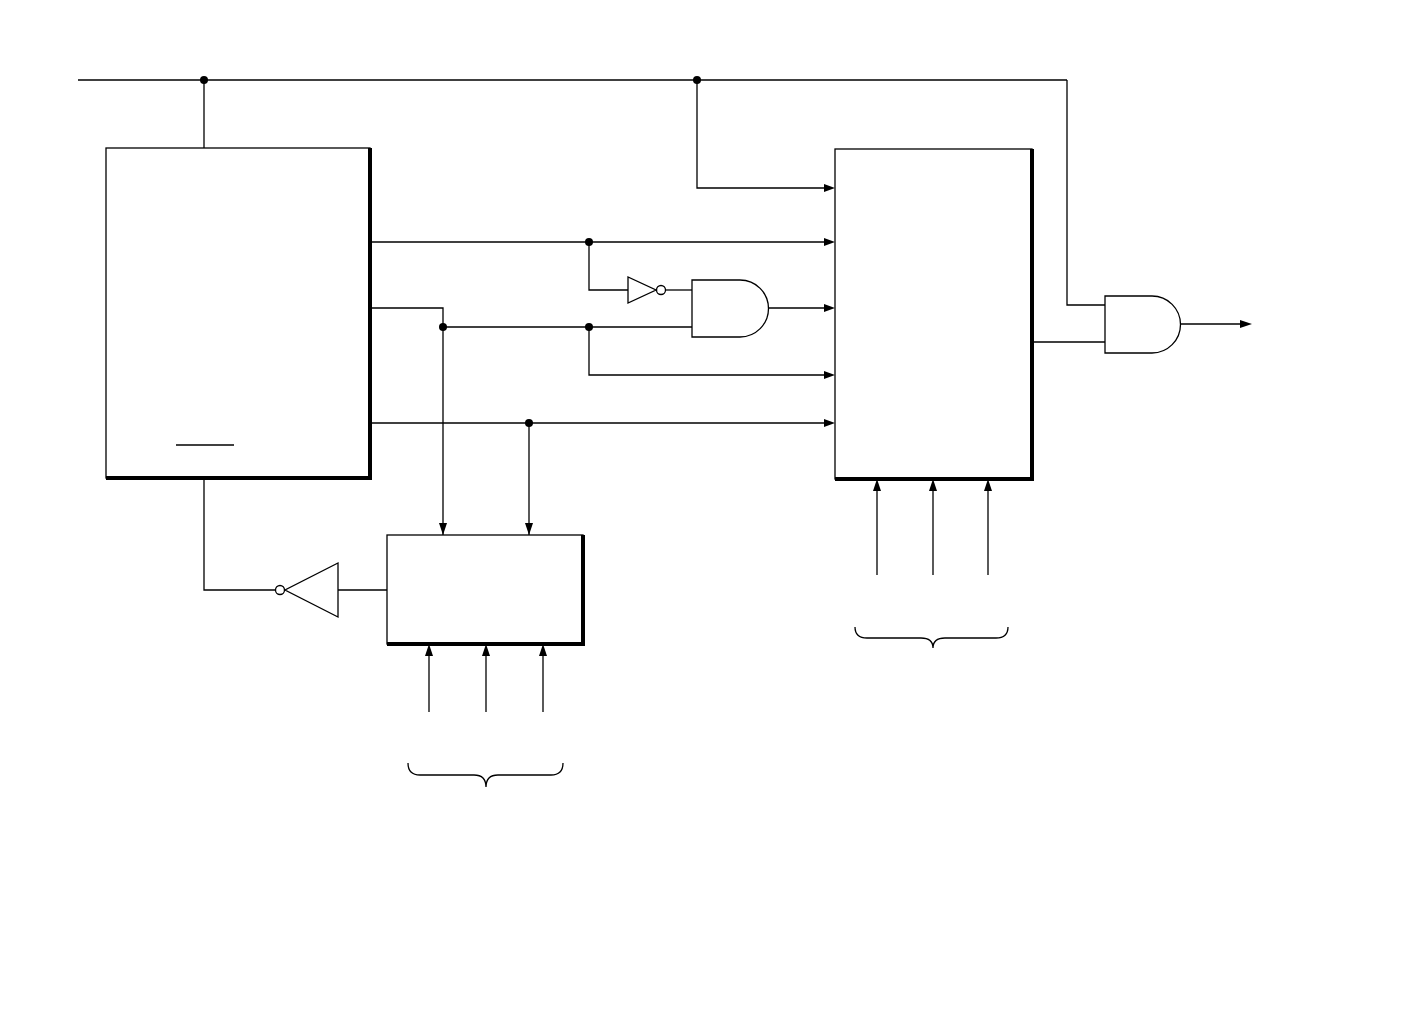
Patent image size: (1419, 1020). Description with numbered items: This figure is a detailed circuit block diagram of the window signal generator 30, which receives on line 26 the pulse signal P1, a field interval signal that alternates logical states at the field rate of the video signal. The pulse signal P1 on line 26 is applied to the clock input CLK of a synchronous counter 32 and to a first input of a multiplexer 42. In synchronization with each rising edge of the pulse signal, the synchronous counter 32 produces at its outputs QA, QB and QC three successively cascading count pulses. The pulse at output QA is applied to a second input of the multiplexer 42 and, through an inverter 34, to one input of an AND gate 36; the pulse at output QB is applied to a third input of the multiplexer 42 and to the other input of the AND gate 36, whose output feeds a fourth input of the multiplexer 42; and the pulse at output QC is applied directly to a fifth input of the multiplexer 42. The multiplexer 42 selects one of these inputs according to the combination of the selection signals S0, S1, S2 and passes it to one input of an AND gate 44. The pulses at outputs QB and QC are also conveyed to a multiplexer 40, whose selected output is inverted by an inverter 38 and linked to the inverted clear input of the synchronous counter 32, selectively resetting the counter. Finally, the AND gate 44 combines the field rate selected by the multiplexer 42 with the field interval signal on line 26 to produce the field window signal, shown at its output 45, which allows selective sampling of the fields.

The line 26 is at (122, 80).
The window signal generator 30 is at (1144, 88).
The synchronous counter 32 is at (143, 480).
The inverter 34 is at (655, 274).
The AND gate 36 is at (760, 290).
The inverter 38 is at (311, 604).
The multiplexer 40 is at (585, 570).
The multiplexer 42 is at (882, 148).
The AND gate 44 is at (1142, 295).
The field window signal output 45 is at (1212, 326).